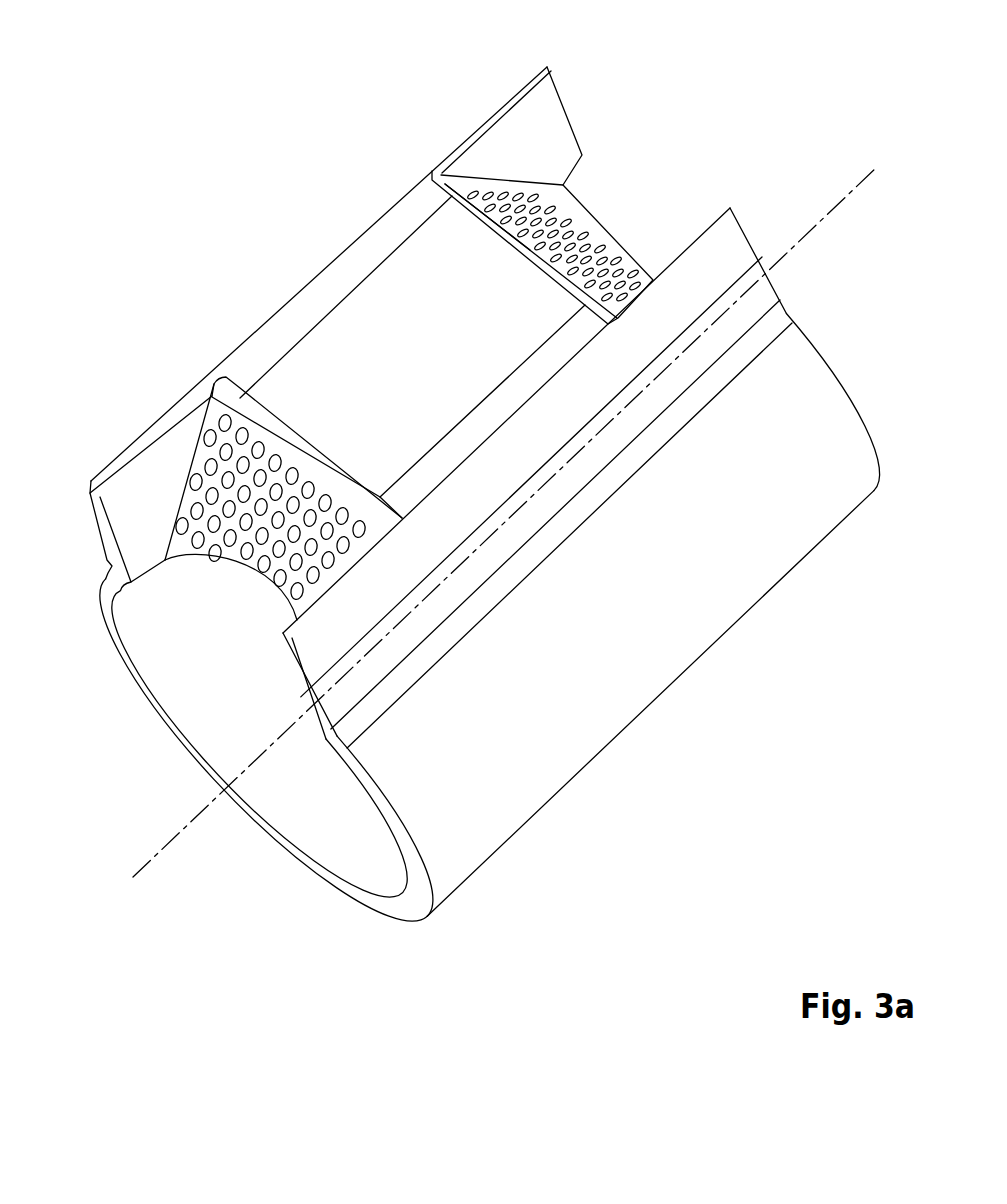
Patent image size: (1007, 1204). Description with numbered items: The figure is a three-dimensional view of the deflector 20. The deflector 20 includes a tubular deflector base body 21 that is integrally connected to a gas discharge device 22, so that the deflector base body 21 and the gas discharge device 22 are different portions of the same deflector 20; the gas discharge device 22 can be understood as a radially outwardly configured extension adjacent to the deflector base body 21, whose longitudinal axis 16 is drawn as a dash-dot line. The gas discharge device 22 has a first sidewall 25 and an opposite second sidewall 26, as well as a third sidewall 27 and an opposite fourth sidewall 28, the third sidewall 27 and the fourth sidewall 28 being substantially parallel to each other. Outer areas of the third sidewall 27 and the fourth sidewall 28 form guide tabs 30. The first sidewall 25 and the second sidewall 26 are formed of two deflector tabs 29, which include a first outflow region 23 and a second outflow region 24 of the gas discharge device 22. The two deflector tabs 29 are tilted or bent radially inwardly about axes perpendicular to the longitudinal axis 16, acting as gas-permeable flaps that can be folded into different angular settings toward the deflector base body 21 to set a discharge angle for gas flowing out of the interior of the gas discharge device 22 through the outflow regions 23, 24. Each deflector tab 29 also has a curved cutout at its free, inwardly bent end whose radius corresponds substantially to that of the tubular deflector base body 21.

The longitudinal axis 16 is at (860, 183).
The deflector 20 is at (490, 586).
The deflector base body 21 is at (597, 730).
The gas discharge device 22 is at (443, 390).
The first outflow region 23 is at (593, 253).
The second outflow region 24 is at (280, 560).
The first sidewall 25 is at (561, 247).
The second sidewall 26 is at (283, 511).
The third sidewall 27 is at (770, 300).
The fourth sidewall 28 is at (327, 287).
The deflector tabs 29 is at (567, 213).
The guide tabs 30 is at (547, 107).